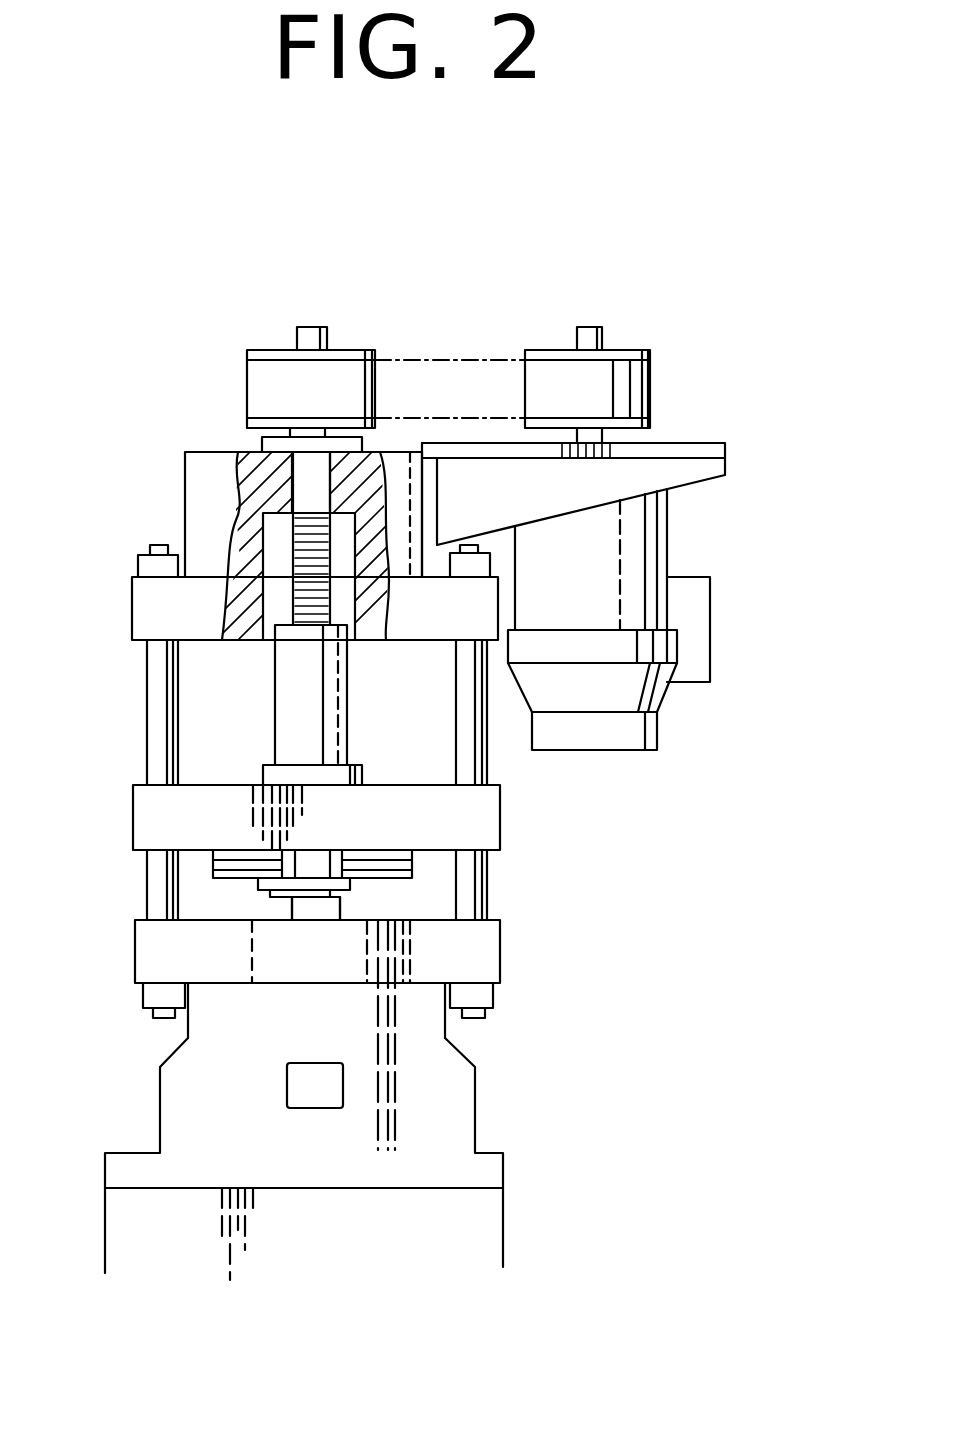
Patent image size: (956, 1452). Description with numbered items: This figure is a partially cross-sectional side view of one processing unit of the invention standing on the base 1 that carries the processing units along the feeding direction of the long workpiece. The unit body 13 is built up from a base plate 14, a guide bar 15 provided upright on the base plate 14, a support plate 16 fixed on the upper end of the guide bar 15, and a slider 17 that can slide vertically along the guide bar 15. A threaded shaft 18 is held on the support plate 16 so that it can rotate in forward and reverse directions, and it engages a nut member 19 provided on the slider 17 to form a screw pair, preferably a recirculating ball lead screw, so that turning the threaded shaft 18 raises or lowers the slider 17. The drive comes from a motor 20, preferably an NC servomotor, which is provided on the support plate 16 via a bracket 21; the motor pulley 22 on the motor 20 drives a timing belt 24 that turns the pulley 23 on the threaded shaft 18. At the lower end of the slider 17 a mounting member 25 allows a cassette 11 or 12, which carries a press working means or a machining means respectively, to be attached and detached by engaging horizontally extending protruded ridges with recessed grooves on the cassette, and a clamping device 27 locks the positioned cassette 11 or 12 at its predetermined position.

The base 1 is at (465, 1230).
The cassette 11 is at (374, 905).
The cassette 12 is at (316, 908).
The unit body 13 is at (135, 393).
The base plate 14 is at (148, 962).
The guide bar 15 is at (157, 757).
The support plate 16 is at (165, 612).
The slider 17 is at (153, 822).
The threaded shaft 18 is at (295, 548).
The nut member 19 is at (295, 688).
The motor 20 is at (640, 538).
The bracket 21 is at (695, 448).
The motor pulley 22 is at (353, 350).
The pulley 23 is at (648, 350).
The timing belt 24 is at (483, 357).
The mounting member 25 is at (337, 855).
The clamping device 27 is at (340, 900).